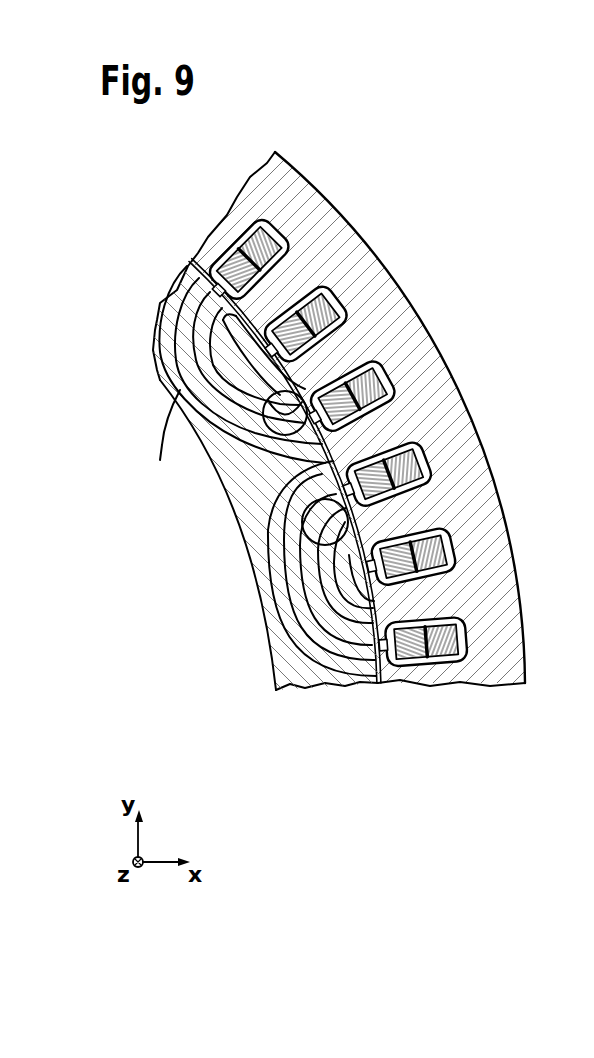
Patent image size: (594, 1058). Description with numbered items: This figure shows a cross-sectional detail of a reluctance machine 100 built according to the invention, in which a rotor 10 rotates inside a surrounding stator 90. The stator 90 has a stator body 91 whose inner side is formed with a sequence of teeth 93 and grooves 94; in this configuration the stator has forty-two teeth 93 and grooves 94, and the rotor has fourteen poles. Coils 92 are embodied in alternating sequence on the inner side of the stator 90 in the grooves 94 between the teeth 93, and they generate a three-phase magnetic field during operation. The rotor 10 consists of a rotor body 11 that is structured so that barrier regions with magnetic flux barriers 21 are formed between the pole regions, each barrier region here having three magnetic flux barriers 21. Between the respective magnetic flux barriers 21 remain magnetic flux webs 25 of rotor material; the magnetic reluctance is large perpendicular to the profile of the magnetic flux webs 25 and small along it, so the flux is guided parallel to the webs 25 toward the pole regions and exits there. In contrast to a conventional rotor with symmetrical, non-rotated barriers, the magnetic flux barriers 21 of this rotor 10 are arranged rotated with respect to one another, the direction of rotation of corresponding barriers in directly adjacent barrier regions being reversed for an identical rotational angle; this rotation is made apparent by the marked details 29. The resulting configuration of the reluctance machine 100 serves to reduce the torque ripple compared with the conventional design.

The rotor 10 is at (265, 512).
The rotor body 11 is at (286, 662).
The magnetic flux barriers 21 is at (258, 372).
The magnetic flux webs 25 is at (336, 583).
The marked details 29 is at (348, 382).
The stator 90 is at (372, 404).
The stator body 91 is at (330, 224).
The coils 92 is at (440, 457).
The teeth 93 is at (362, 263).
The grooves 94 is at (363, 400).
The reluctance machine 100 is at (462, 237).